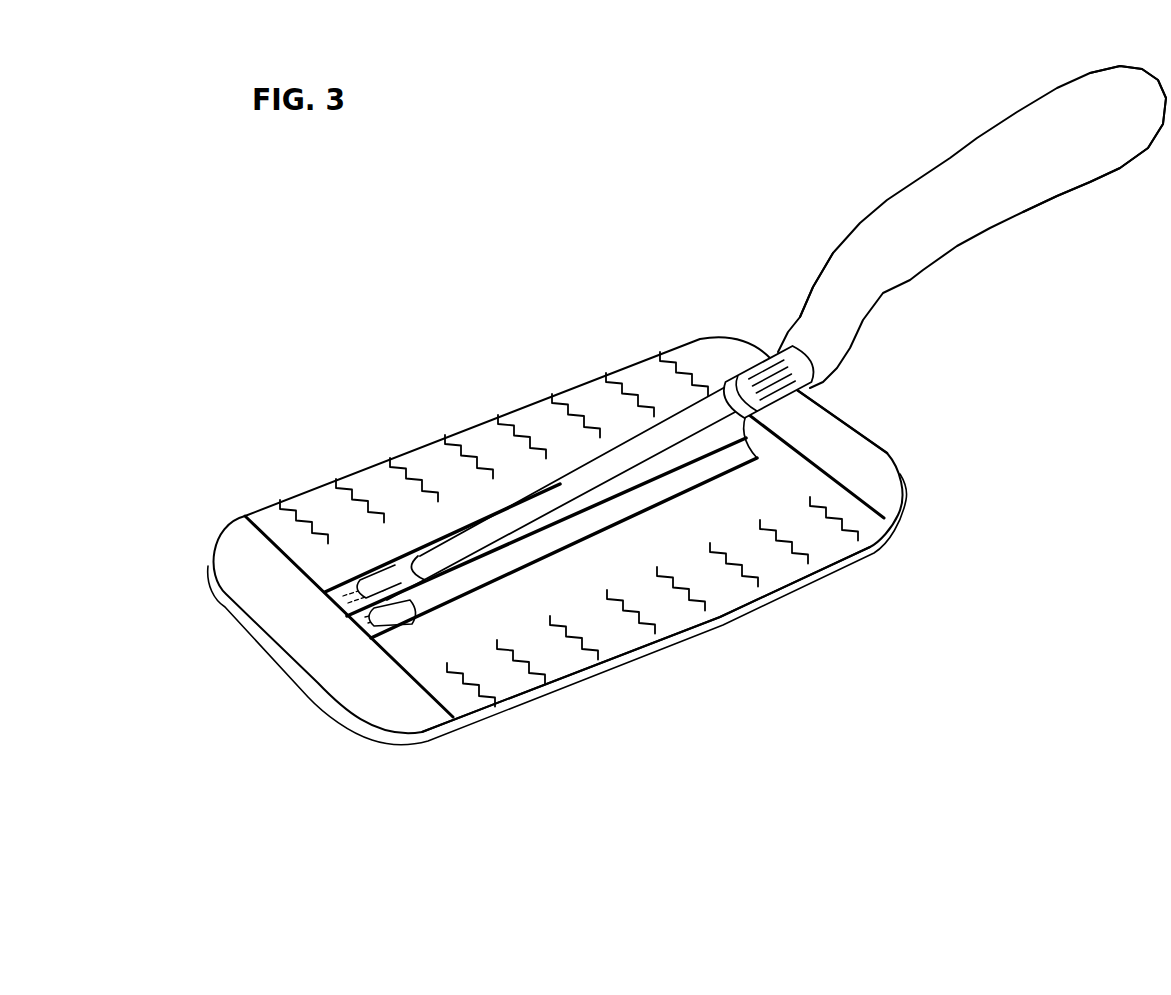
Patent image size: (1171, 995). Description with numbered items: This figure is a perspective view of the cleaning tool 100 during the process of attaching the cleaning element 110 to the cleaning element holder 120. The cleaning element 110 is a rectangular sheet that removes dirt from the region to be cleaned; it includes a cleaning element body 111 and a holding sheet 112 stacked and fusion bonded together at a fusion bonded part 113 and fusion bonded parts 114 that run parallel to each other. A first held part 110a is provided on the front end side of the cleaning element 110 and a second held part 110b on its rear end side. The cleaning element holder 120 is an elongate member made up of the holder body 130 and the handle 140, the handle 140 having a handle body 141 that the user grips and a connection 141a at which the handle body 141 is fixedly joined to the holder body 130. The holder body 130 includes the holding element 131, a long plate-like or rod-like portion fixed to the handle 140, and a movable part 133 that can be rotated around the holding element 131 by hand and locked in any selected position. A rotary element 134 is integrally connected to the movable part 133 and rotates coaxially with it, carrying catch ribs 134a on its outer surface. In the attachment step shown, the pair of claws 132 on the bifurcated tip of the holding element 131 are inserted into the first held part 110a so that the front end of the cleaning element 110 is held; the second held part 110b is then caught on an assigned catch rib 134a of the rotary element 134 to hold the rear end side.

The cleaning tool 100 is at (446, 283).
The cleaning element 110 is at (591, 576).
The first held part 110a is at (360, 600).
The second held part 110b is at (772, 438).
The cleaning element body 111 is at (859, 553).
The holding sheet 112 is at (782, 577).
The fusion bonded part 113 is at (572, 524).
The fusion bonded parts 114 is at (408, 551).
The cleaning element holder 120 is at (944, 227).
The holder body 130 is at (551, 532).
The holding element 131 is at (522, 507).
The claws 132 is at (345, 588).
The movable part 133 is at (776, 343).
The rotary element 134 is at (776, 360).
The catch ribs 134a is at (800, 393).
The handle 140 is at (944, 227).
The handle body 141 is at (993, 198).
The connection 141a is at (798, 312).